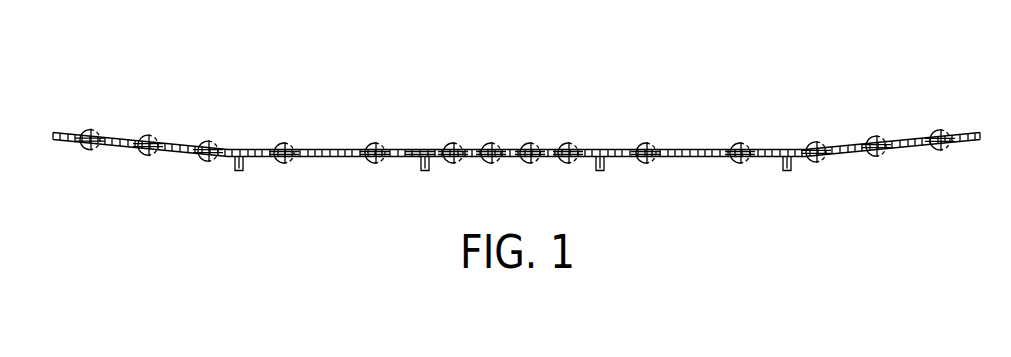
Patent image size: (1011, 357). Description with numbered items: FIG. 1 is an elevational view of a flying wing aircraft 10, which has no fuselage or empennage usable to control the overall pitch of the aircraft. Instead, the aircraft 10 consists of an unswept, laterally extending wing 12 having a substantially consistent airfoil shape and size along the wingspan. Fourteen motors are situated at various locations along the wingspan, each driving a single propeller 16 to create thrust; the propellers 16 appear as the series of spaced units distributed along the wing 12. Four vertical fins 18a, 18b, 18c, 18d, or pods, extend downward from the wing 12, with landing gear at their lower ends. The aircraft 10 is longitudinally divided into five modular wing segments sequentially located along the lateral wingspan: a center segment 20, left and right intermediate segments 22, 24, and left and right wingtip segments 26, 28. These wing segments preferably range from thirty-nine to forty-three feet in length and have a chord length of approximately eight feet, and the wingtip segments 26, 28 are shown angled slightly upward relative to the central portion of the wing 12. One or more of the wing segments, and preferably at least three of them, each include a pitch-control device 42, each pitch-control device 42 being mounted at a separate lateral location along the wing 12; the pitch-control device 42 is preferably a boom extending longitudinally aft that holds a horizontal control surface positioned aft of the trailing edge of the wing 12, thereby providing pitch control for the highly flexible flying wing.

The flying wing aircraft 10 is at (884, 64).
The wing 12 is at (627, 145).
The propeller 16 is at (160, 133).
The vertical fin 18a is at (788, 172).
The vertical fin 18b is at (601, 172).
The vertical fin 18c is at (426, 172).
The vertical fin 18d is at (240, 172).
The center segment 20 is at (473, 148).
The left intermediate segment 22 is at (731, 145).
The right intermediate segment 24 is at (384, 148).
The left wingtip segment 26 is at (888, 135).
The right wingtip segment 28 is at (103, 134).
The pitch-control device 42 is at (420, 148).